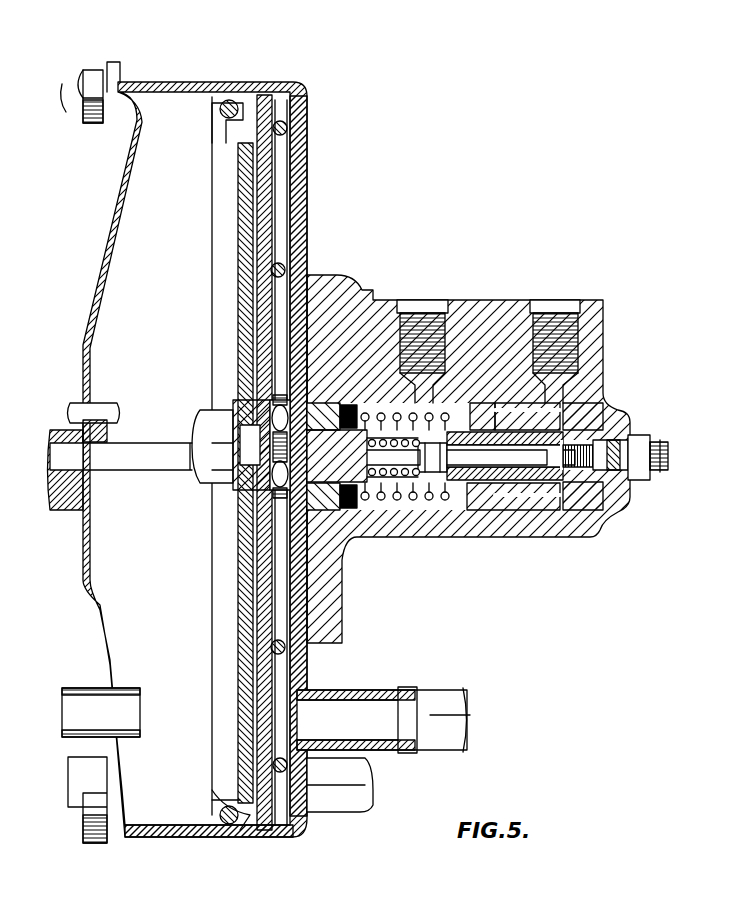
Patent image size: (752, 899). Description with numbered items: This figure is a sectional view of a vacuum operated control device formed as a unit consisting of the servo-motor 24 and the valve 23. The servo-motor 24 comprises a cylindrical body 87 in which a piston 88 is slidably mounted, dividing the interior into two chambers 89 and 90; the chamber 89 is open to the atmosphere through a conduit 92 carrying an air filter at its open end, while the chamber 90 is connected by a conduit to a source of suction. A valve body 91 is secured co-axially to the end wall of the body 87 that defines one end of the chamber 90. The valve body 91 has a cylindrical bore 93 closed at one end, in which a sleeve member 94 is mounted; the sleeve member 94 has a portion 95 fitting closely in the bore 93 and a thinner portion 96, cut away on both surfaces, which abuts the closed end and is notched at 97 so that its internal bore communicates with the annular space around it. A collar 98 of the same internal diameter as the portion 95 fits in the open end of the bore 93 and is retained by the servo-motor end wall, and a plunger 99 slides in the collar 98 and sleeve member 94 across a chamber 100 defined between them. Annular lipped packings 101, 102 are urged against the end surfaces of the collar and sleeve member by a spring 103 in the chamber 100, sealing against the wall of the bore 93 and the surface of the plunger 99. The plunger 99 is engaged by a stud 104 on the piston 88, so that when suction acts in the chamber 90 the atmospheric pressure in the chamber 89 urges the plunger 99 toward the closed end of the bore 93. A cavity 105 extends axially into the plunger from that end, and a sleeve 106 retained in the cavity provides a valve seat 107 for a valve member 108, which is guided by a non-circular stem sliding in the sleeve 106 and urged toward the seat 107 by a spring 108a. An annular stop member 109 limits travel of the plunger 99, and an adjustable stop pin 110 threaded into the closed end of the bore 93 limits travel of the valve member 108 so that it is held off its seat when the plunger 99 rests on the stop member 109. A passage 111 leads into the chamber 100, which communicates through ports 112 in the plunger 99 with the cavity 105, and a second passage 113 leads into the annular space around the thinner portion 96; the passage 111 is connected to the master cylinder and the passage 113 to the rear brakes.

The valve 23 is at (337, 265).
The servo-motor 24 is at (212, 78).
The cylindrical body 87 is at (197, 833).
The piston 88 is at (262, 525).
The chamber 89 is at (176, 283).
The chamber 90 is at (293, 110).
The valve body 91 is at (492, 298).
The conduit 92 is at (88, 775).
The cylindrical bore 93 is at (403, 540).
The sleeve member 94 is at (547, 540).
The portion 95 is at (468, 510).
The thinner portion 96 is at (555, 530).
The notch 97 is at (565, 492).
The collar 98 is at (342, 600).
The plunger 99 is at (415, 530).
The chamber 100 is at (372, 403).
The annular lipped packing 101 is at (348, 408).
The annular lipped packing 102 is at (453, 520).
The spring 103 is at (405, 405).
The stud 104 is at (292, 448).
The cavity 105 is at (400, 540).
The sleeve 106 is at (583, 325).
The valve seat 107 is at (480, 520).
The valve member 108 is at (460, 405).
The spring 108a is at (407, 540).
The annular stop member 109 is at (604, 400).
The adjustable stop pin 110 is at (651, 440).
The passage 111 is at (420, 340).
The ports 112 is at (490, 400).
The second passage 113 is at (555, 355).